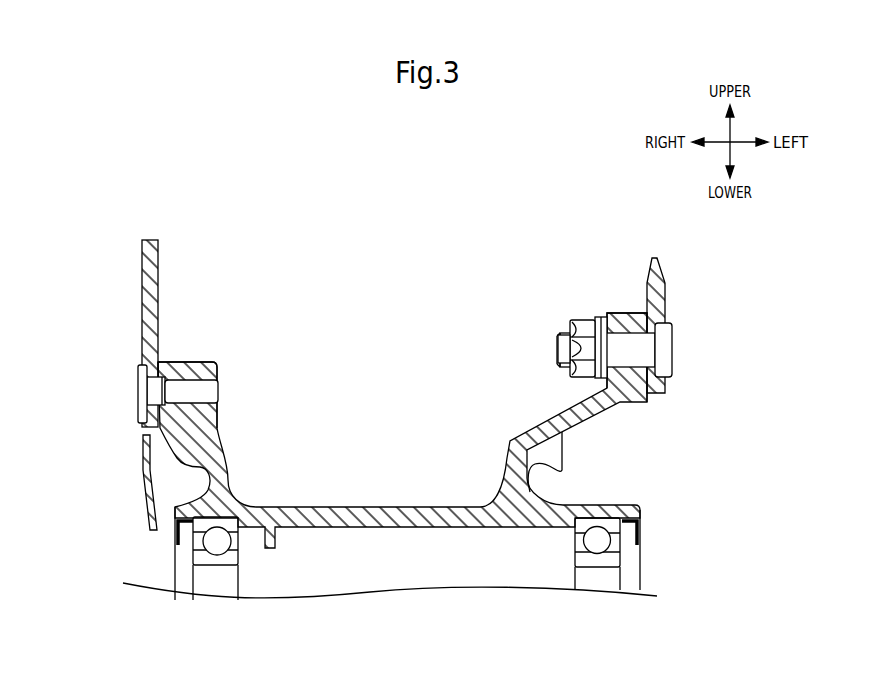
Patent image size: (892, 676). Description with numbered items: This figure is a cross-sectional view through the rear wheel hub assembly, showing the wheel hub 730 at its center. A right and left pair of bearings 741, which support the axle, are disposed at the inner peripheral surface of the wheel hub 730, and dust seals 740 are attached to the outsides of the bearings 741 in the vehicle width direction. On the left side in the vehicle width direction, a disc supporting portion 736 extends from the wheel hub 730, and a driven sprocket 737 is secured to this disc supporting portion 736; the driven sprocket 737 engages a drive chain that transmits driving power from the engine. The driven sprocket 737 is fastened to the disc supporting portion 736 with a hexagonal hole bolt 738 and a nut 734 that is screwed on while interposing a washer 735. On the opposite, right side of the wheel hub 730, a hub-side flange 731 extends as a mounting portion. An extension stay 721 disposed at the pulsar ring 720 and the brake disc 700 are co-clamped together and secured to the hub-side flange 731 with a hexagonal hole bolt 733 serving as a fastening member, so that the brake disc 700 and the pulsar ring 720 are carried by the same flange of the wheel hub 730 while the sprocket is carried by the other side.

The brake disc 700 is at (142, 267).
The pulsar ring 720 is at (136, 484).
The extension stay 721 is at (158, 371).
The wheel hub 730 is at (372, 506).
The hub-side flange 731 is at (186, 363).
The hexagonal hole bolt 733 is at (147, 392).
The nut 734 is at (583, 321).
The washer 735 is at (600, 316).
The disc supporting portion 736 is at (627, 315).
The driven sprocket 737 is at (659, 292).
The hexagonal hole bolt 738 is at (666, 347).
The dust seal 740 is at (183, 533).
The bearing 741 is at (217, 545).